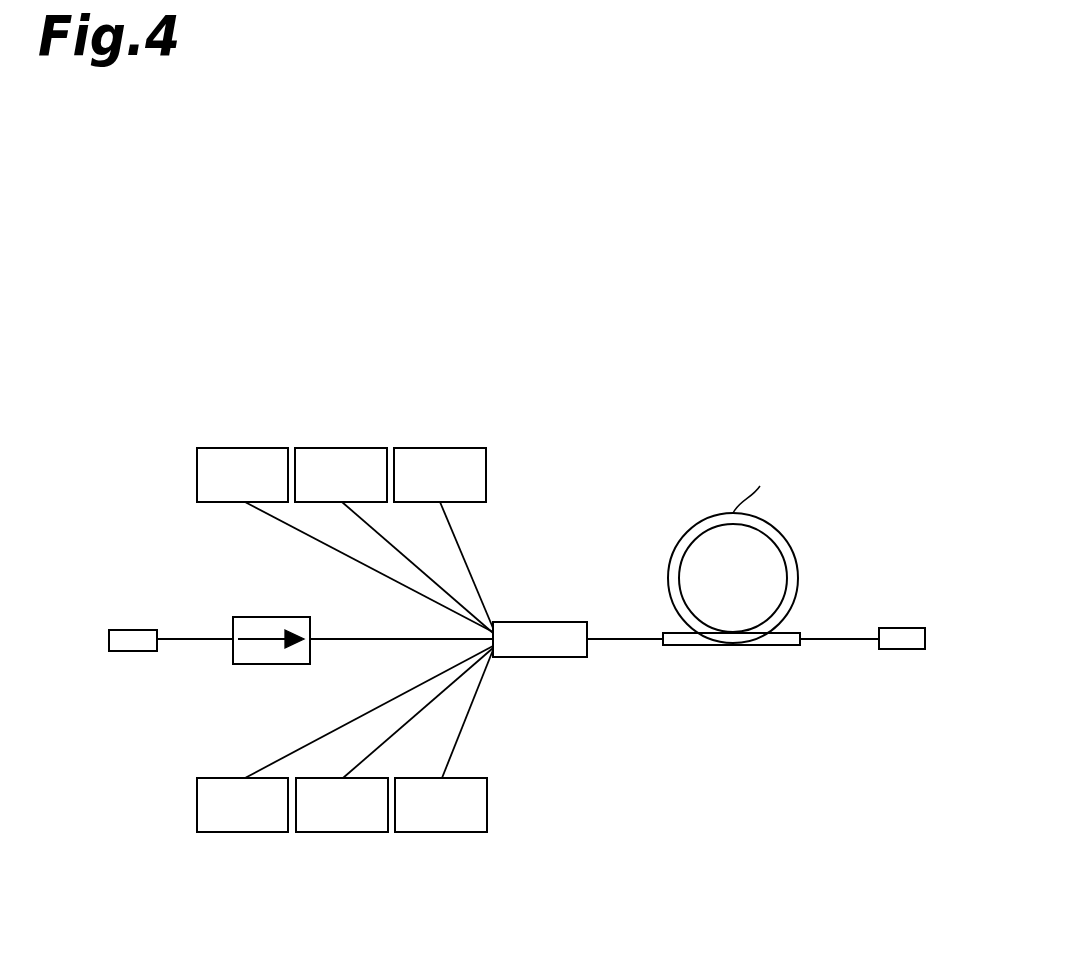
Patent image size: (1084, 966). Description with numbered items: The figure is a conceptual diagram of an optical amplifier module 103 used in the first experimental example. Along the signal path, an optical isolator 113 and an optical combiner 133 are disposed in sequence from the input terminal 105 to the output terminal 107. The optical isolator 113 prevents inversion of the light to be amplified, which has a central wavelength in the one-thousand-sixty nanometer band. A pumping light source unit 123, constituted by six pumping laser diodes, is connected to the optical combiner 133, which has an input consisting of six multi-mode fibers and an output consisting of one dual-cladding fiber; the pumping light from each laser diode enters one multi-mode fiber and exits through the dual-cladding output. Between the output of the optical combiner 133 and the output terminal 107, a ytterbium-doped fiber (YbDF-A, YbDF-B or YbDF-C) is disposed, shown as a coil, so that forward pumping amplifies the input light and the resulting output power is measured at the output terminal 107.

The optical amplifier module 103 is at (828, 341).
The input terminal 105 is at (130, 630).
The output terminal 107 is at (900, 628).
The optical isolator 113 is at (268, 617).
The pumping light source unit 123 is at (315, 840).
The optical combiner 133 is at (540, 622).